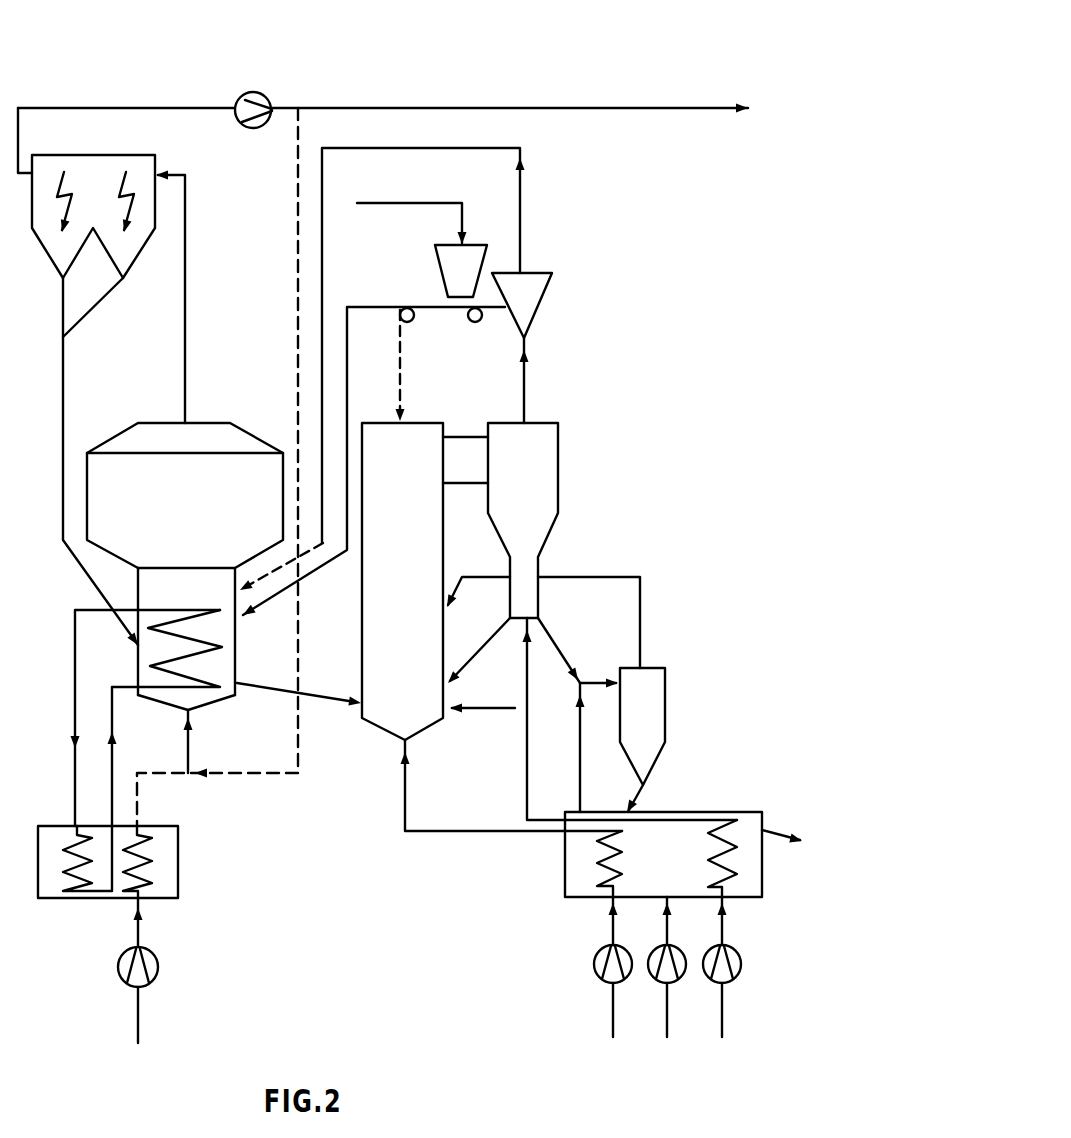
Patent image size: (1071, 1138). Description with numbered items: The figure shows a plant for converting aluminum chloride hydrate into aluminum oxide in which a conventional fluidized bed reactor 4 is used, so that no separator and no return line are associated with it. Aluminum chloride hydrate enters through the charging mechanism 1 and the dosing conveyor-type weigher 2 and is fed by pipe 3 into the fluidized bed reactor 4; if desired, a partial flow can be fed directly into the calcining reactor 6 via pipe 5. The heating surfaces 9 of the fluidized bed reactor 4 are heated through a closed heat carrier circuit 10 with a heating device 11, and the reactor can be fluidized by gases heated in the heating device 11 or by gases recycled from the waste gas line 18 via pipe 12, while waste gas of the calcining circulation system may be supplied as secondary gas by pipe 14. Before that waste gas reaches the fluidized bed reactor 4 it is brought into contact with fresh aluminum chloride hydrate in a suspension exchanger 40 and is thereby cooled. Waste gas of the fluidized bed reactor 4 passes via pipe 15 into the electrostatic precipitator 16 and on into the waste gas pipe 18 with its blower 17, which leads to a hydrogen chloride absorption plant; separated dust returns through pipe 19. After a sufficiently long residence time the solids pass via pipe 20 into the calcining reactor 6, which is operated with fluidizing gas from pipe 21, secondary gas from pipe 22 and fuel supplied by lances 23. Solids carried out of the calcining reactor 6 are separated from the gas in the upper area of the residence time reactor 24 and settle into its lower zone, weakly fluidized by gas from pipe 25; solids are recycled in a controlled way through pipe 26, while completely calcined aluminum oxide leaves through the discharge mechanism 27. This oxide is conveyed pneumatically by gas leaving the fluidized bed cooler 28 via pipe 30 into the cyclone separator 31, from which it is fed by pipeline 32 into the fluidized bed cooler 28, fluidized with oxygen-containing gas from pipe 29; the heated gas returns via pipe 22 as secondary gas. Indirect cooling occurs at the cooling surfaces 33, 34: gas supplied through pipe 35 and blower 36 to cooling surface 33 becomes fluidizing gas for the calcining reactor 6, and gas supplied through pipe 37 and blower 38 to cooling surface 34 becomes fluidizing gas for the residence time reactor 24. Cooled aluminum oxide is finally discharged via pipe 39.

The charging mechanism 1 is at (442, 266).
The dosing conveyor-type weigher 2 is at (449, 309).
The pipe 3 is at (362, 308).
The fluidized-bed reactor 4 is at (211, 423).
The pipe 5 is at (402, 383).
The calcining reactor 6 is at (362, 593).
The heating surfaces 9 is at (205, 640).
The heat carrier circuit 10 is at (112, 698).
The heating device 11 is at (68, 898).
The pipe 12 is at (298, 200).
The pipe 14 is at (322, 225).
The pipe 15 is at (185, 278).
The electrostatic precipitator 16 is at (45, 250).
The blower 17 is at (248, 92).
The waste gas pipe 18 is at (433, 108).
The pipe 19 is at (63, 370).
The pipe 20 is at (272, 690).
The pipe 21 is at (403, 795).
The pipe 22 is at (578, 577).
The lances 23 is at (478, 708).
The residence time reactor 24 is at (558, 452).
The pipe 25 is at (527, 775).
The pipe 26 is at (475, 657).
The discharge mechanism 27 is at (557, 648).
The fluidized bed cooler 28 is at (565, 875).
The pipe 29 is at (667, 1010).
The pipe 30 is at (581, 755).
The cyclone separator 31 is at (665, 688).
The pipeline 32 is at (648, 795).
The cooling surface 33 is at (600, 845).
The cooling surface 34 is at (710, 835).
The pipe 35 is at (613, 1016).
The blower 36 is at (597, 962).
The pipe 37 is at (722, 1010).
The blower 38 is at (742, 962).
The pipe 39 is at (762, 830).
The suspension exchanger 40 is at (540, 295).